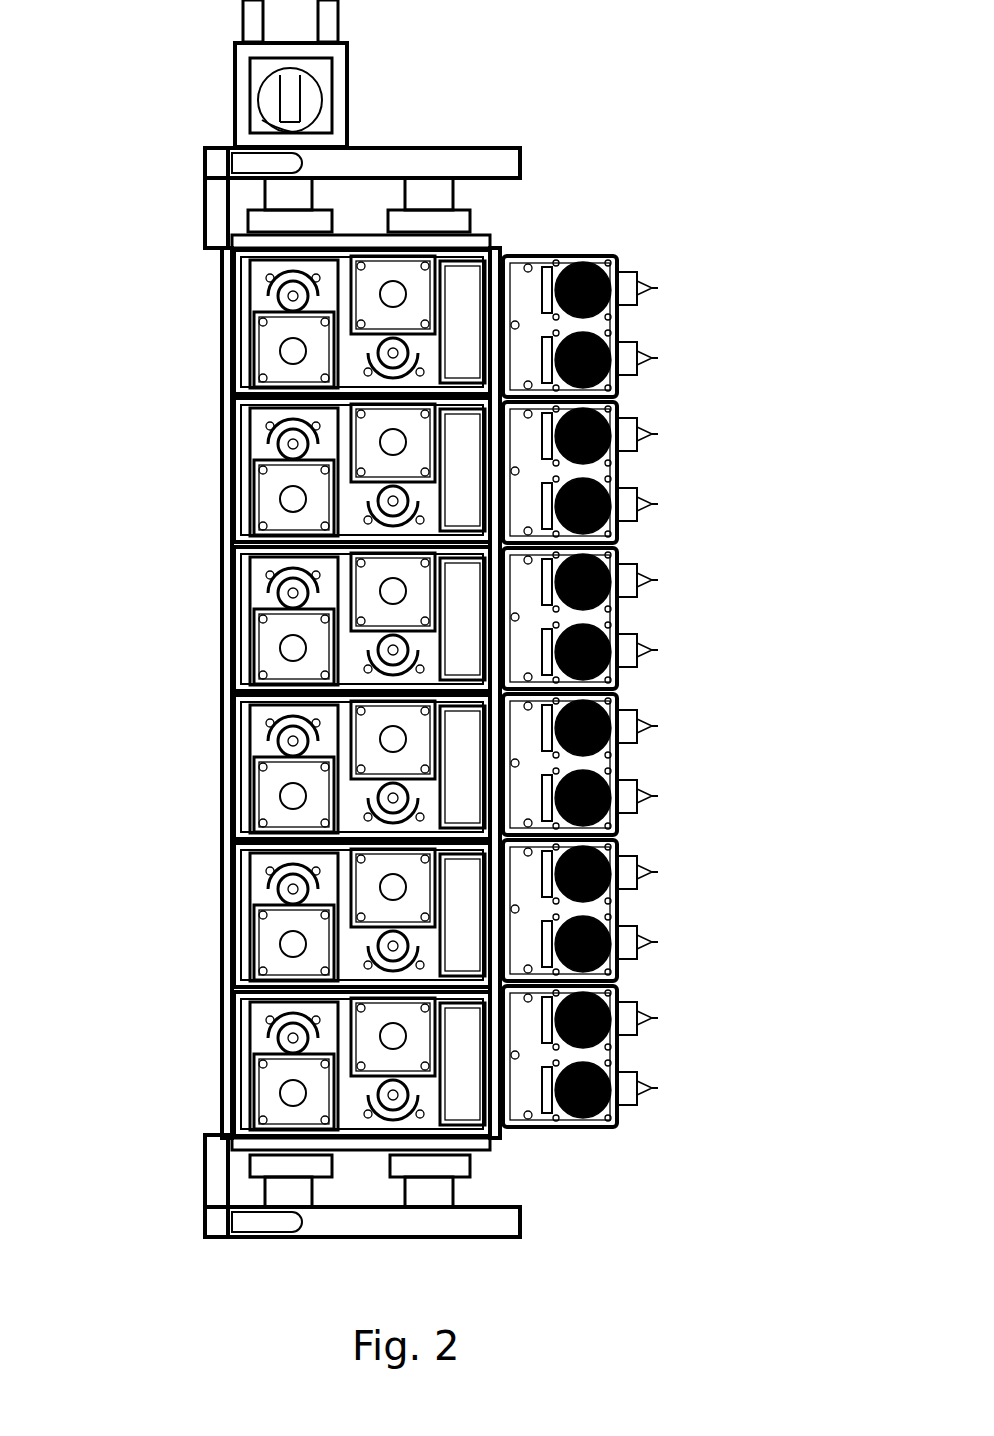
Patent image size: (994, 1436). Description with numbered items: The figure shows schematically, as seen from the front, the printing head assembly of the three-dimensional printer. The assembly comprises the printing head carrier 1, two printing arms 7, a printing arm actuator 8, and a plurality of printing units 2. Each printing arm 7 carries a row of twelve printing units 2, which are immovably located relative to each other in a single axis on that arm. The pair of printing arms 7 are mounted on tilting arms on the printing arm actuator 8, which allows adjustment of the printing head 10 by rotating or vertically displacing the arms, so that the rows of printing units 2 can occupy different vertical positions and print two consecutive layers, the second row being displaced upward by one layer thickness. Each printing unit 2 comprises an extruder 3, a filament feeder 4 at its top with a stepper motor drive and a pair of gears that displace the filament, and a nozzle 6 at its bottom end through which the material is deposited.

The printing head carrier 1 is at (215, 1200).
The printing unit 2 is at (672, 290).
The extruder 3 is at (590, 238).
The filament feeder 4 is at (390, 355).
The nozzle 6 is at (657, 730).
The printing arm 7 is at (285, 192).
The printing arm actuator 8 is at (340, 0).
The printing head 10 is at (677, 128).